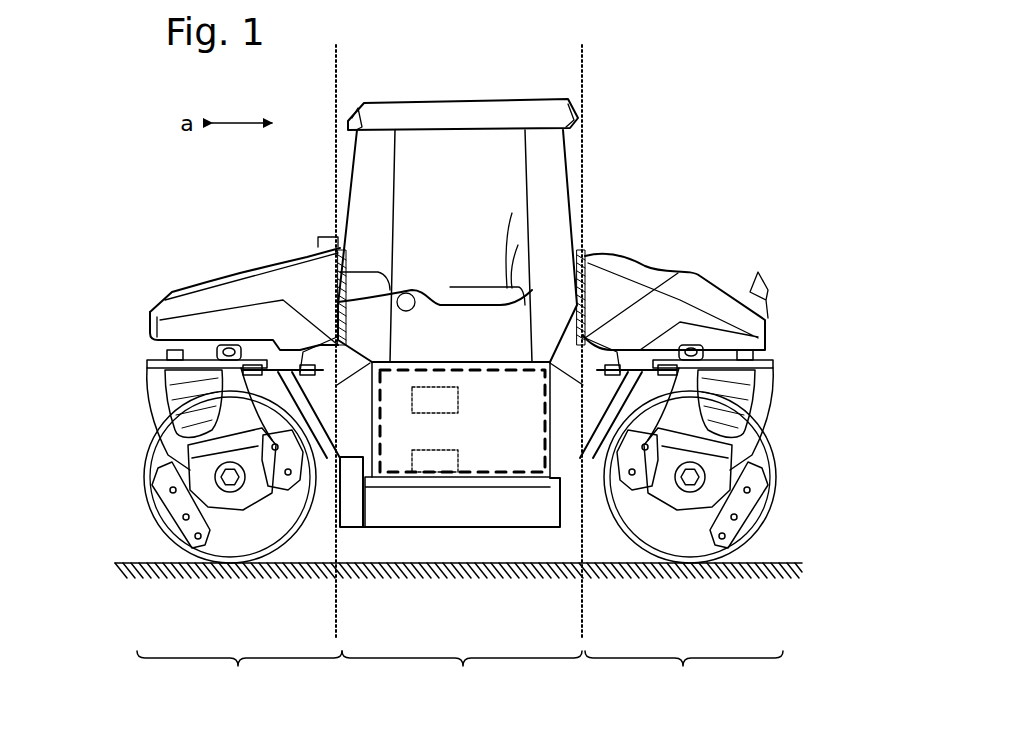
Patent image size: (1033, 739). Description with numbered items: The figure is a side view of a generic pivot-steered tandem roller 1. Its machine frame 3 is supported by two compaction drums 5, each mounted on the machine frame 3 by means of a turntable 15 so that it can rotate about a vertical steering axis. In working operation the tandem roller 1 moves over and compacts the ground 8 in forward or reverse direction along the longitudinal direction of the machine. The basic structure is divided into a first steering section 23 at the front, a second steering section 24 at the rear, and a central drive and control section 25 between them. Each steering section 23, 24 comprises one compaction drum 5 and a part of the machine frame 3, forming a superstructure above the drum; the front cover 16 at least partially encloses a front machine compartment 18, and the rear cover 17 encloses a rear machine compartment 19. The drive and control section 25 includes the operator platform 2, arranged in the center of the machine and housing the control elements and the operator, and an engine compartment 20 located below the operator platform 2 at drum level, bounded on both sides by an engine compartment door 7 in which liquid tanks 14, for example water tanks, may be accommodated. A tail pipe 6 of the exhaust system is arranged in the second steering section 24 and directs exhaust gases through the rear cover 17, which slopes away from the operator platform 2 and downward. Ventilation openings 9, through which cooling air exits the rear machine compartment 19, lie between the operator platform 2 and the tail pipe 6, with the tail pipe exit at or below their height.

The tandem roller 1 is at (620, 152).
The operator platform 2 is at (472, 178).
The machine frame 3 is at (286, 285).
The compaction drum 5 is at (198, 563).
The tail pipe 6 is at (758, 278).
The engine compartment door 7 is at (488, 433).
The ground 8 is at (333, 573).
The ventilation opening 9 is at (224, 296).
The liquid tank 14 is at (450, 473).
The turntable 15 is at (165, 357).
The front cover 16 is at (212, 299).
The rear cover 17 is at (666, 307).
The front machine compartment 18 is at (183, 311).
The rear machine compartment 19 is at (718, 318).
The engine compartment 20 is at (471, 488).
The first steering section 23 is at (239, 682).
The second steering section 24 is at (684, 682).
The drive and control section 25 is at (462, 682).